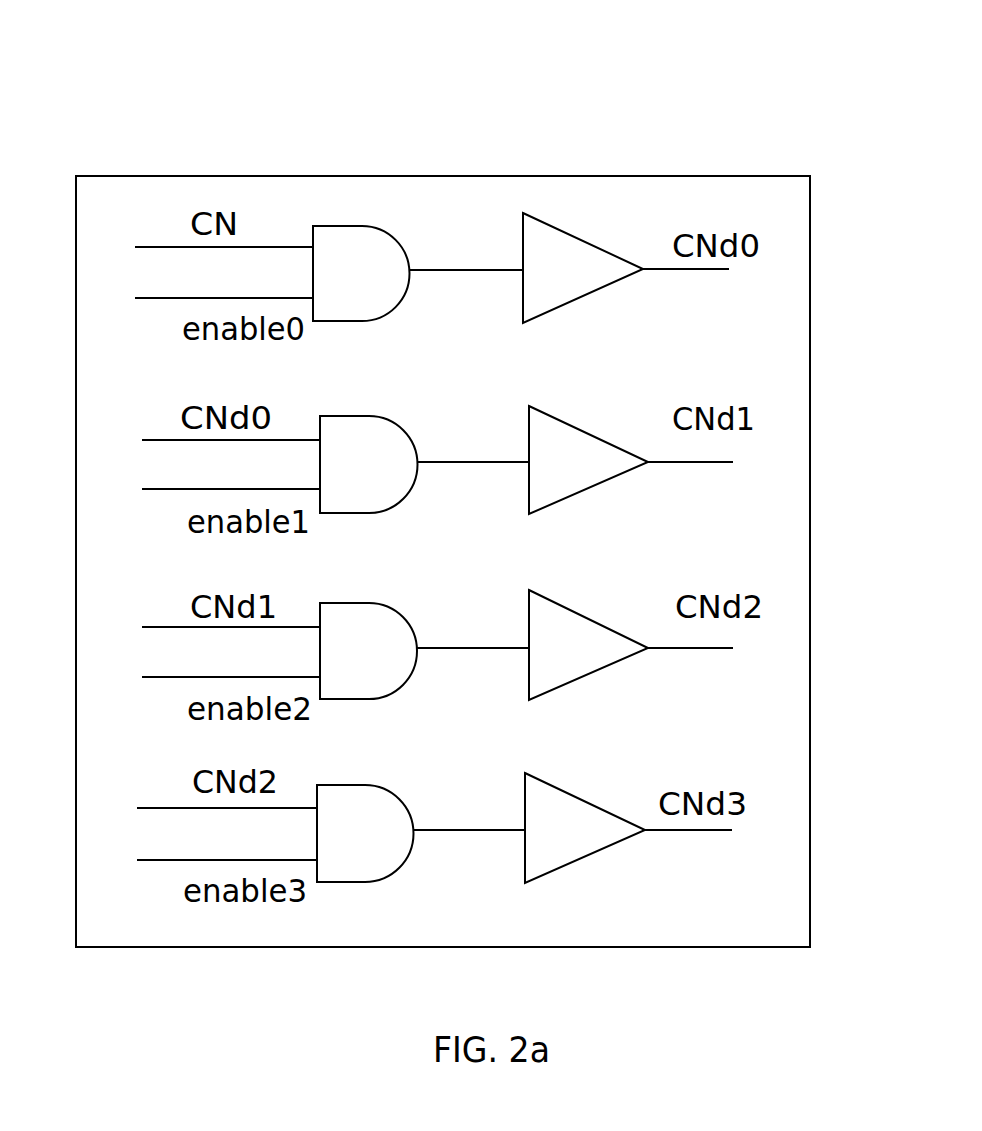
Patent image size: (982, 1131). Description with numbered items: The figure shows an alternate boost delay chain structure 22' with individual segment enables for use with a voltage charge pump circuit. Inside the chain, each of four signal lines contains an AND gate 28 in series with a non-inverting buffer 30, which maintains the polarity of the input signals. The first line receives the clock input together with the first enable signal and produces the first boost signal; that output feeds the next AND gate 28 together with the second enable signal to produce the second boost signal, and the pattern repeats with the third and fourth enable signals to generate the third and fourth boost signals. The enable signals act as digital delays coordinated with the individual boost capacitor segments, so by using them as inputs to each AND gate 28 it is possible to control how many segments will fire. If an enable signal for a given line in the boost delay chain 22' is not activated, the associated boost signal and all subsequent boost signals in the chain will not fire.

The boost delay chain structure 22' is at (443, 507).
The AND gate 28 is at (372, 227).
The non-inverting buffer 30 is at (577, 237).